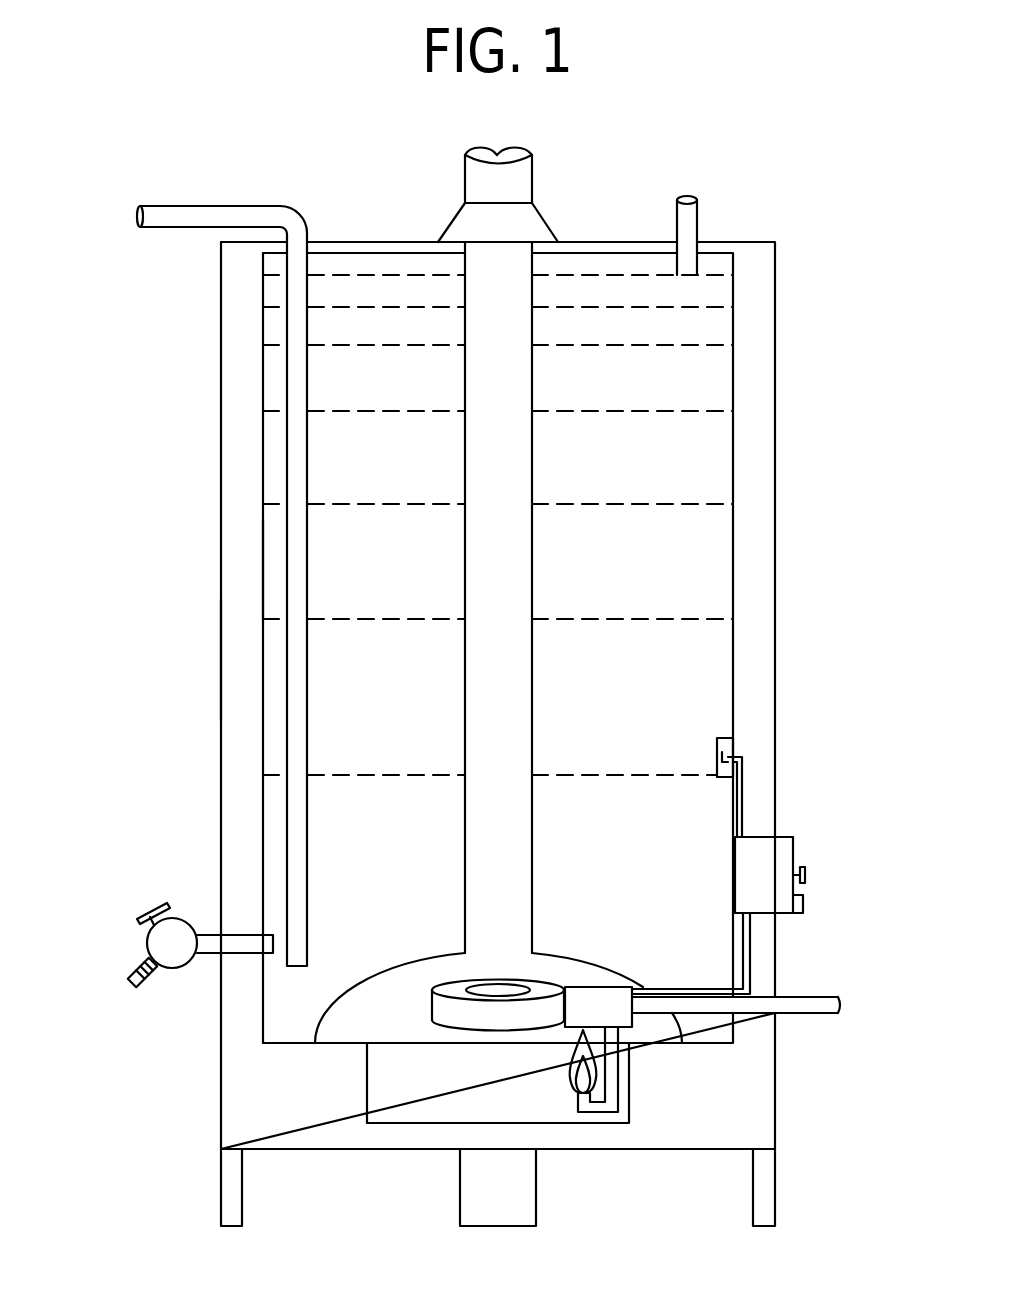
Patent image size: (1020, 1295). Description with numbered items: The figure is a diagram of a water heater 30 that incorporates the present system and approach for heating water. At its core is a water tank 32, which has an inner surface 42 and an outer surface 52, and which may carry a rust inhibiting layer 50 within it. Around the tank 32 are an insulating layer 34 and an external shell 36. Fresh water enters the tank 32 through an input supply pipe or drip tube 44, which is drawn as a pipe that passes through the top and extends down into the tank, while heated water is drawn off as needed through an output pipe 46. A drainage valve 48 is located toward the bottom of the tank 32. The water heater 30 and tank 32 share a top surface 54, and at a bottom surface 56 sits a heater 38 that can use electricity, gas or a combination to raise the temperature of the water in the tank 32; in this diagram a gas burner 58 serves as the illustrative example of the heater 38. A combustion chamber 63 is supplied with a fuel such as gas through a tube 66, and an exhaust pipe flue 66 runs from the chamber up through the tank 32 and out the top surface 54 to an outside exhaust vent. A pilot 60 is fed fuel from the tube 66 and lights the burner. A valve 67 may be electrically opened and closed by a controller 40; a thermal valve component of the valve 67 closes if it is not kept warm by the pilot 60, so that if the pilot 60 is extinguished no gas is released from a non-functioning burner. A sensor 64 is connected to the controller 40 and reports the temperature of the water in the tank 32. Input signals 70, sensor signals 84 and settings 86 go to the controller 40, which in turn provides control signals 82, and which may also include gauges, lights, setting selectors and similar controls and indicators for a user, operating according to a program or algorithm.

The water heater 30 is at (641, 161).
The water tank 32 is at (273, 457).
The insulating layer 34 is at (233, 337).
The external shell 36 is at (221, 650).
The heater 38 is at (385, 1030).
The controller 40 is at (797, 853).
The inner surface 42 is at (276, 716).
The input supply pipe or drip tube 44 is at (178, 206).
The output pipe 46 is at (699, 215).
The drainage valve 48 is at (147, 942).
The rust inhibiting layer 50 is at (272, 789).
The outer surface 52 is at (262, 565).
The top surface 54 is at (602, 253).
The bottom surface 56 is at (656, 1045).
The gas burner 58 is at (453, 1013).
The pilot 60 is at (572, 1070).
The combustion chamber 63 is at (505, 978).
The sensor 64 is at (725, 748).
The tube / exhaust pipe flue 66 is at (467, 172).
The valve 67 is at (592, 1002).
The input signals 70 is at (805, 875).
The control signals 82 is at (750, 953).
The sensor signals 84 is at (743, 800).
The settings 86 is at (805, 905).